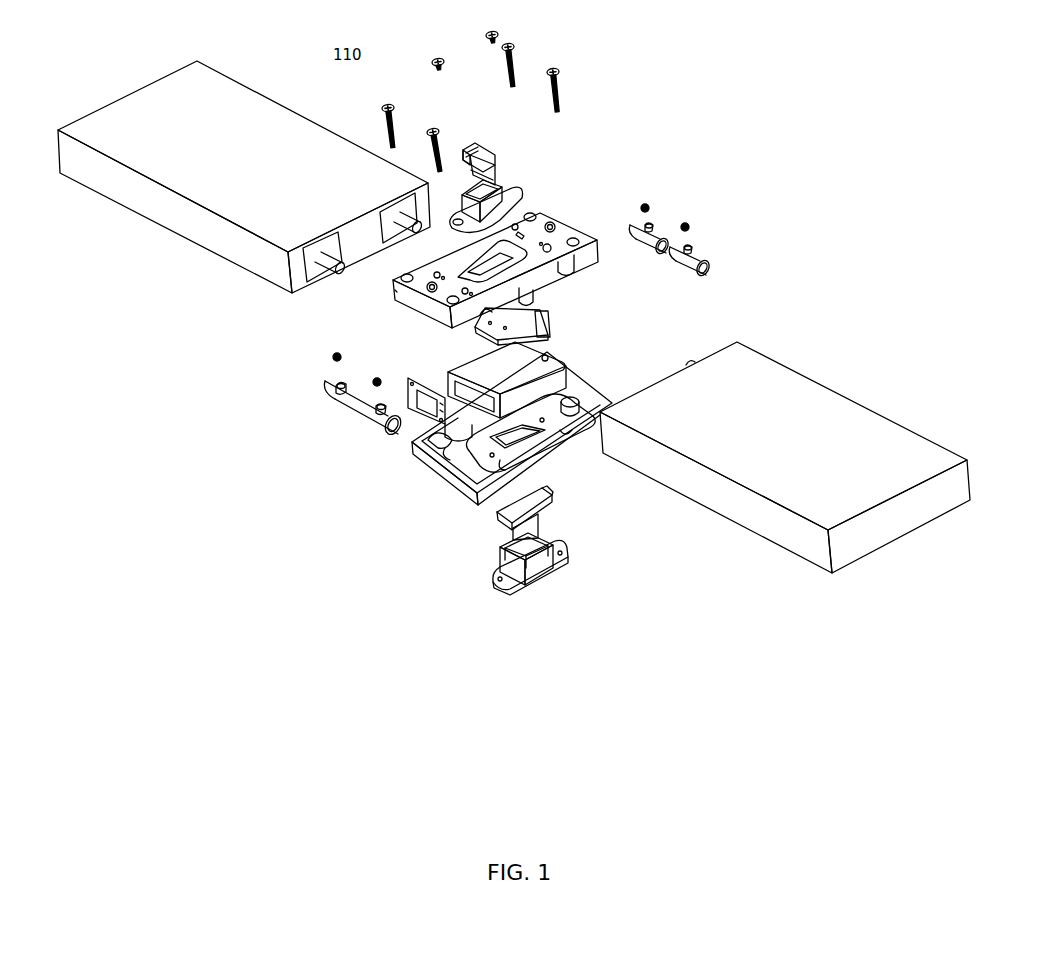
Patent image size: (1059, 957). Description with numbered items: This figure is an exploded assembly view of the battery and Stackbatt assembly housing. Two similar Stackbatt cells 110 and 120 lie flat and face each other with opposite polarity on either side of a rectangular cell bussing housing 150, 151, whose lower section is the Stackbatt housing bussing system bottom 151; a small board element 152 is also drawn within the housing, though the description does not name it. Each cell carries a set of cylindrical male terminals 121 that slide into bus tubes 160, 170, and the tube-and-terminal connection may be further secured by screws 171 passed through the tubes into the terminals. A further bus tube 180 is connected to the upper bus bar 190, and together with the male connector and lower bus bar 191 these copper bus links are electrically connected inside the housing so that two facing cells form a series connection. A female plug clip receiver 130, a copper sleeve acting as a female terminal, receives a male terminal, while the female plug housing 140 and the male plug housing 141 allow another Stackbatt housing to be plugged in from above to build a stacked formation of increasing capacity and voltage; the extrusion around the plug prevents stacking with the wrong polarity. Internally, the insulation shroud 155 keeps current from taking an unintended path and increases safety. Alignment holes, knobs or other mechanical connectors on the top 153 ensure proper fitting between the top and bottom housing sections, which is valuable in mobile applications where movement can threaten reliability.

The Stackbatt cell 110 is at (285, 102).
The Stackbatt cell 120 is at (777, 360).
The male terminals 121 is at (323, 275).
The female plug clip receiver 130 is at (497, 157).
The female plug housing 140 is at (523, 202).
The male plug housing 141 is at (500, 553).
The cell bussing housing 150 is at (495, 248).
The Stackbatt housing bussing system bottom 151 is at (415, 460).
The circuit board 152 is at (420, 377).
The top alignment feature 153 is at (408, 292).
The insulation shroud 155 is at (575, 350).
The bus tube 160 is at (348, 415).
The bus tube 170 is at (660, 233).
The screws 171 is at (692, 223).
The bus tube 180 is at (713, 255).
The upper bus bar 190 is at (557, 310).
The male connector and lower bus bar 191 is at (553, 515).